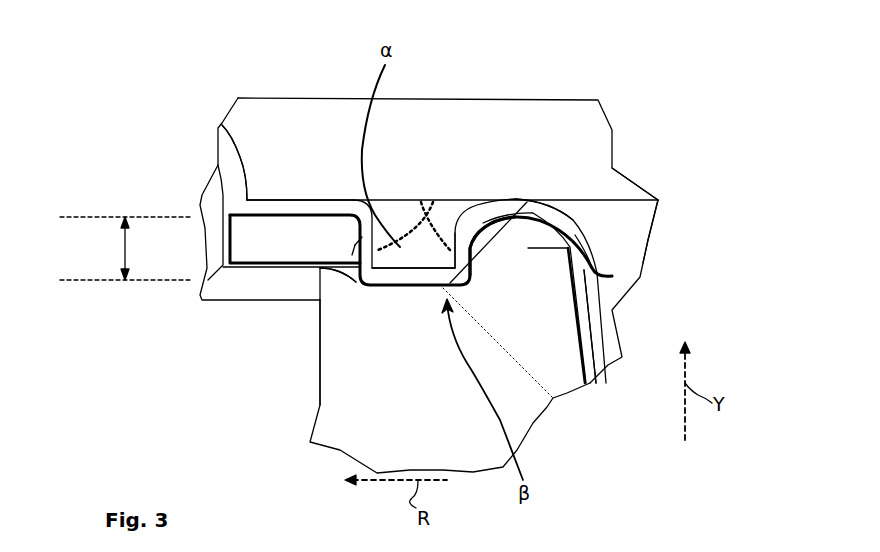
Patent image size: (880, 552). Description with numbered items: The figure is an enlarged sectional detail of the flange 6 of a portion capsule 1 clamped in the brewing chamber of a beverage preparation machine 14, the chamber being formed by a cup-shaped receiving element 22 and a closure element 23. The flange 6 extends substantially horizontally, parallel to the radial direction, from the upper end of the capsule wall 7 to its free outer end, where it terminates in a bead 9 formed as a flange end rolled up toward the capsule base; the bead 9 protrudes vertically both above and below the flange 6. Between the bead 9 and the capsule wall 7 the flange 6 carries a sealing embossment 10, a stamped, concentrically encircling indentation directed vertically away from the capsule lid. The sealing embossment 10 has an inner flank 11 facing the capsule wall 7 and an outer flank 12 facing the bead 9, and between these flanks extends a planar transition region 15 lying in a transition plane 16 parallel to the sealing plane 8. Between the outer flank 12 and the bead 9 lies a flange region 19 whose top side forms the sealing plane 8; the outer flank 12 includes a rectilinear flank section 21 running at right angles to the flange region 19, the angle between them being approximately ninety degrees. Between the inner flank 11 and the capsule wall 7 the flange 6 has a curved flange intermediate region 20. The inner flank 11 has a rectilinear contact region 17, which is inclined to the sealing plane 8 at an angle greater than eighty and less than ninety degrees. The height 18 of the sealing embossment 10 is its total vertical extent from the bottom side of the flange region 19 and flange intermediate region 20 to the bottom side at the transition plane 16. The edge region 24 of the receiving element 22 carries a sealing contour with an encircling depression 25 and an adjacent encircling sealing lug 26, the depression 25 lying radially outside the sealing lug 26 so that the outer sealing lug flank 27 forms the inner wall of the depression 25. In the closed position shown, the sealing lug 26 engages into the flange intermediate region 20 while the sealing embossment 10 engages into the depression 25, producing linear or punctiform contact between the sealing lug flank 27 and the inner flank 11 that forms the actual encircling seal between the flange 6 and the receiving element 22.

The portion capsule 1 is at (629, 251).
The flange 6 is at (300, 128).
The capsule wall 7 is at (592, 338).
The sealing plane 8 is at (275, 202).
The bead 9 is at (230, 167).
The sealing embossment 10 is at (422, 240).
The inner flank 11 is at (473, 222).
The outer flank 12 is at (362, 237).
The beverage preparation machine 14 is at (429, 285).
The transition region 15 is at (303, 341).
The transition plane 16 is at (397, 278).
The contact region 17 is at (476, 256).
The height 18 is at (123, 238).
The flange region 19 is at (293, 200).
The flange intermediate region 20 is at (539, 207).
The rectilinear flank section 21 is at (355, 245).
The receiving element 22 is at (462, 433).
The closure element 23 is at (447, 156).
The edge region 24 is at (335, 423).
The depression 25 is at (349, 277).
The sealing lug 26 is at (612, 276).
The sealing lug flank 27 is at (477, 243).